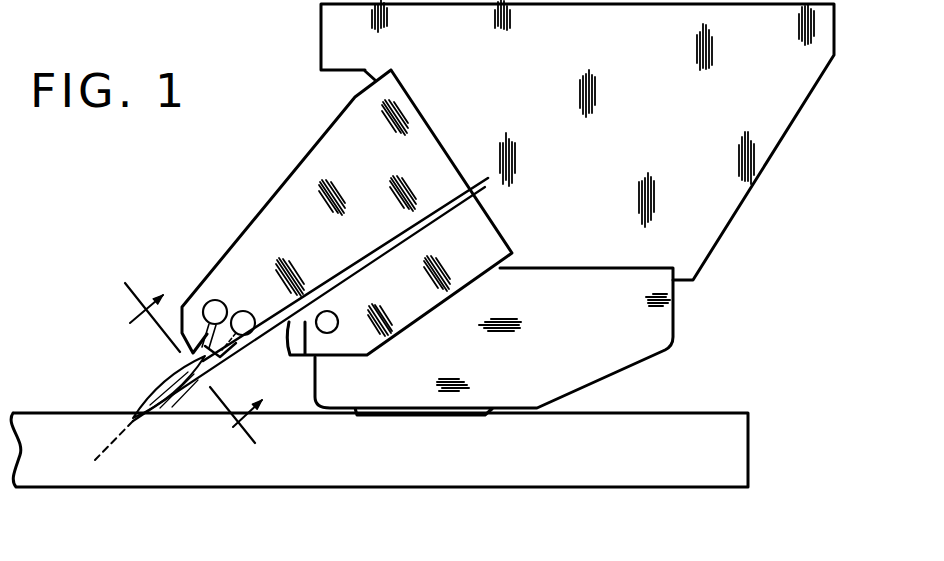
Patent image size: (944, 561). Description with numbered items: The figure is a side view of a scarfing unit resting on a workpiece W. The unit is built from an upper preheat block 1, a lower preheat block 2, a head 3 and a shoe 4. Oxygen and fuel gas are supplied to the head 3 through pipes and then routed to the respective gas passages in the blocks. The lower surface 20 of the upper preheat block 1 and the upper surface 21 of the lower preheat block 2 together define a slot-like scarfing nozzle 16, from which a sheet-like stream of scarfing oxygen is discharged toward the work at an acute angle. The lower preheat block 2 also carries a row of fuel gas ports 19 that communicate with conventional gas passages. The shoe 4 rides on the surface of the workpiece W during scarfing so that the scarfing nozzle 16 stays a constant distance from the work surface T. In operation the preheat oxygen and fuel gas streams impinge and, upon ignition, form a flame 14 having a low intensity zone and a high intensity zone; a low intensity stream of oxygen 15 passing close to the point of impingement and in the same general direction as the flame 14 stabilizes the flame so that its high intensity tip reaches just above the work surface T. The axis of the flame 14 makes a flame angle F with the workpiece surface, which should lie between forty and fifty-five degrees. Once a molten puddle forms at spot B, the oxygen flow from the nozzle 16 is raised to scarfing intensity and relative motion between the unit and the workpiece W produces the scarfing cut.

The upper preheat block 1 is at (277, 200).
The lower preheat block 2 is at (457, 267).
The head 3 is at (770, 113).
The shoe 4 is at (673, 320).
The flame 14 is at (177, 368).
The low intensity stream of oxygen 15 is at (241, 350).
The scarfing nozzle 16 is at (289, 352).
The fuel gas ports 19 is at (312, 330).
The lower surface of the upper preheat block 20 is at (438, 205).
The upper surface of the lower preheat block 21 is at (460, 205).
The work surface T is at (92, 392).
The spot B is at (125, 432).
The flame angle F is at (178, 416).
The workpiece W is at (702, 440).